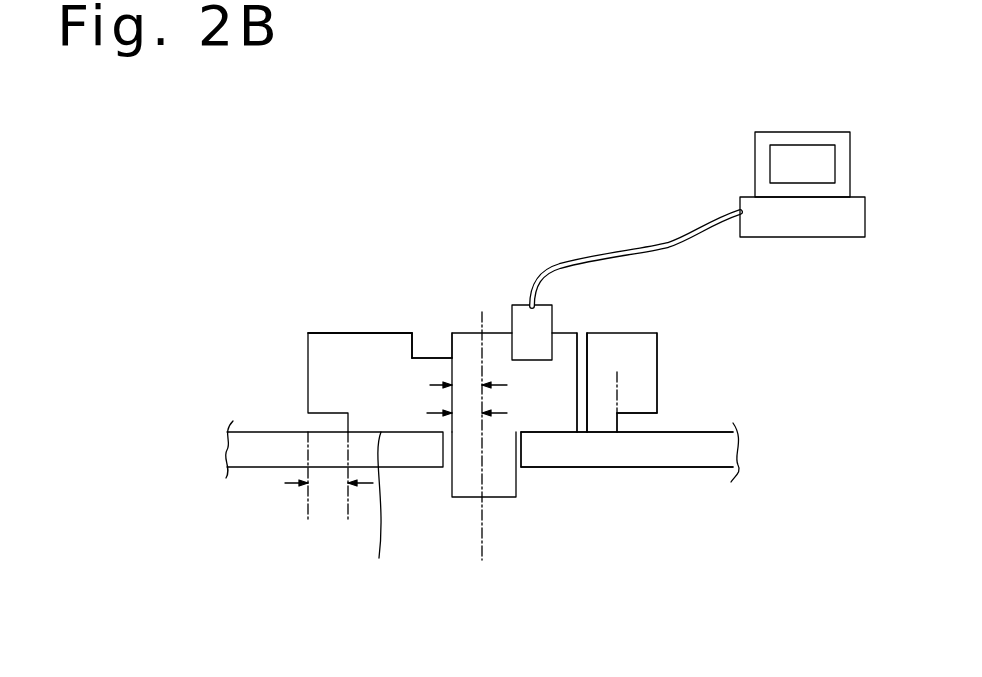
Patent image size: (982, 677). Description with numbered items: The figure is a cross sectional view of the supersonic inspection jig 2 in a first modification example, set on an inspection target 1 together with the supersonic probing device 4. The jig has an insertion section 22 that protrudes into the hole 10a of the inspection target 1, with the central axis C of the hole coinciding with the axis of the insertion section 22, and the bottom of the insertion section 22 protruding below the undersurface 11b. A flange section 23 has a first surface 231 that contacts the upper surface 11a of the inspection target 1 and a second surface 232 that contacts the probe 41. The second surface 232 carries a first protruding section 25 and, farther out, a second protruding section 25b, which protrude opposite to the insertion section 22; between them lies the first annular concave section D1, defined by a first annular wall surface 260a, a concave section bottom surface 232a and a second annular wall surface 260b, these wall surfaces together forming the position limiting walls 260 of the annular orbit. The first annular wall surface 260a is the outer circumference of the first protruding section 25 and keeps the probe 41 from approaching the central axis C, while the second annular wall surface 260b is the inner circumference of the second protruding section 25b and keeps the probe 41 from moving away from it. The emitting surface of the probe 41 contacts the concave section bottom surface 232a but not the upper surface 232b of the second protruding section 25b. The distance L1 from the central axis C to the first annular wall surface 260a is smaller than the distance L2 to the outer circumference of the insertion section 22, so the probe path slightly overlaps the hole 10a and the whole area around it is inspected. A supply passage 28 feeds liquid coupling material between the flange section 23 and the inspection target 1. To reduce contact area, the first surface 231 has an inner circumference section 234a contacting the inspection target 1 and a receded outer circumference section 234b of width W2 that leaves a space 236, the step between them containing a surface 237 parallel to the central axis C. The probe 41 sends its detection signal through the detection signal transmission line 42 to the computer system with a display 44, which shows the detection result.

The inspection target 1 is at (688, 457).
The supersonic inspection jig 2 is at (244, 284).
The supersonic probing device 4 is at (550, 308).
The hole 10a is at (519, 460).
The upper surface 11a is at (718, 424).
The undersurface 11b is at (733, 468).
The insertion section 22 is at (458, 488).
The flange section 23 is at (648, 388).
The first protruding section 25 is at (472, 337).
The second protruding section 25b is at (358, 344).
The supply passage 28 is at (582, 425).
The probe 41 is at (540, 333).
The detection signal transmission line 42 is at (682, 237).
The computer system with a display 44 is at (807, 135).
The first surface 231 is at (374, 509).
The second surface 232 is at (192, 355).
The concave section bottom surface 232a is at (423, 368).
The upper surface of the second protruding section 232b is at (316, 336).
The inner circumference section 234a is at (600, 383).
The outer circumference section 234b is at (628, 383).
The space 236 is at (645, 423).
The surface 237 is at (618, 425).
The connecting portion 260 is at (338, 207).
The first annular wall surface 260a is at (450, 338).
The second annular wall surface 260b is at (414, 341).
The central axis C is at (485, 418).
The first annular concave section D1 is at (432, 351).
The distance L1 is at (482, 388).
The distance L2 is at (452, 410).
The width W2 is at (329, 478).